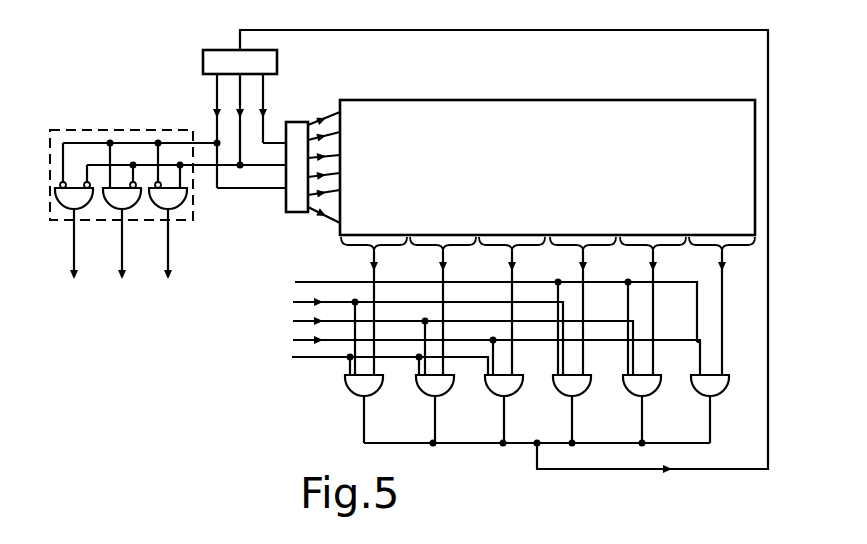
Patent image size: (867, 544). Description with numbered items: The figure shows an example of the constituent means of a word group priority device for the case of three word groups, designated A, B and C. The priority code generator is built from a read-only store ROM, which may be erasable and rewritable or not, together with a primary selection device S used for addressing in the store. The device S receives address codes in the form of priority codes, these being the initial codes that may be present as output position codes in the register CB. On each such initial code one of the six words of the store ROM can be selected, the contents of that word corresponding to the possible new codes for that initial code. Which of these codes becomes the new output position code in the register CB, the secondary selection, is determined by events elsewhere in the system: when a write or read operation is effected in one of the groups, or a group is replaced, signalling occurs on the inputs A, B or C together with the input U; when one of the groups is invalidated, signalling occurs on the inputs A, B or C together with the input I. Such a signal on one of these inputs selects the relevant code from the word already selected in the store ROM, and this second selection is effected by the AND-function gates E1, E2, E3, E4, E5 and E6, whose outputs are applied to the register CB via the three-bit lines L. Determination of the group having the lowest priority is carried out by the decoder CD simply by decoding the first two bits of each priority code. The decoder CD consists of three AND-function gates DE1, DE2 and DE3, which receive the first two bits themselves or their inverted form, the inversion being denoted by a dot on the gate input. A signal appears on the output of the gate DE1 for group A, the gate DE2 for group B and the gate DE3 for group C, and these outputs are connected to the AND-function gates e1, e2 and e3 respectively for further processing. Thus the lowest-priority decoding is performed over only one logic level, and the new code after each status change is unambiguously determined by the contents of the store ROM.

The register CB is at (228, 50).
The decoder CD is at (76, 127).
The AND-function gate DE1 is at (79, 207).
The AND-function gate DE2 is at (127, 207).
The AND-function gate DE3 is at (173, 207).
The AND-function gate e1 is at (73, 258).
The AND-function gate e2 is at (121, 258).
The AND-function gate e3 is at (168, 258).
The primary selection device S is at (287, 205).
The read-only store ROM is at (702, 102).
The input I is at (310, 282).
The input A is at (420, 332).
The input B is at (455, 342).
The input C is at (489, 351).
The input U is at (314, 358).
The AND-function gate E1 is at (372, 392).
The AND-function gate E2 is at (443, 392).
The AND-function gate E3 is at (512, 392).
The AND-function gate E4 is at (580, 392).
The AND-function gate E5 is at (650, 392).
The AND-function gate E6 is at (718, 392).
The lines L is at (767, 298).